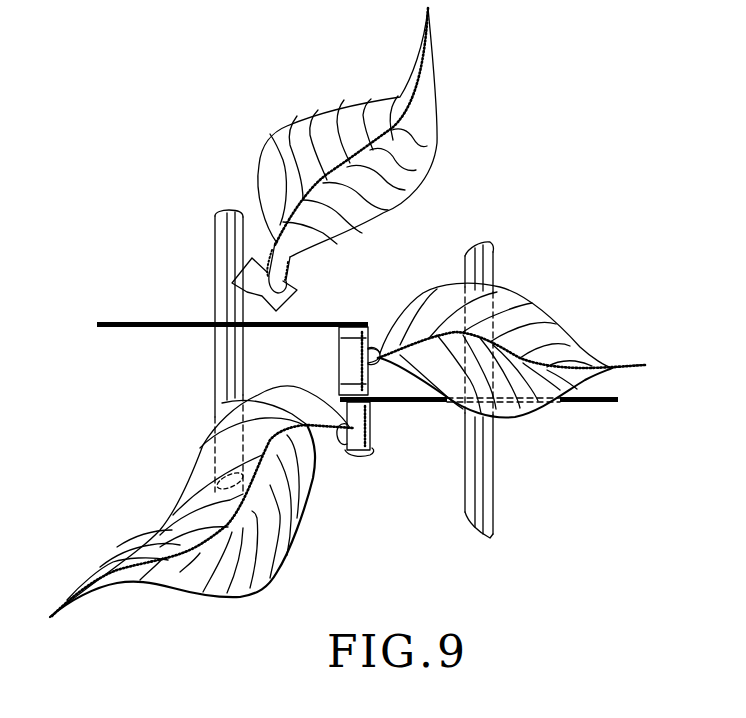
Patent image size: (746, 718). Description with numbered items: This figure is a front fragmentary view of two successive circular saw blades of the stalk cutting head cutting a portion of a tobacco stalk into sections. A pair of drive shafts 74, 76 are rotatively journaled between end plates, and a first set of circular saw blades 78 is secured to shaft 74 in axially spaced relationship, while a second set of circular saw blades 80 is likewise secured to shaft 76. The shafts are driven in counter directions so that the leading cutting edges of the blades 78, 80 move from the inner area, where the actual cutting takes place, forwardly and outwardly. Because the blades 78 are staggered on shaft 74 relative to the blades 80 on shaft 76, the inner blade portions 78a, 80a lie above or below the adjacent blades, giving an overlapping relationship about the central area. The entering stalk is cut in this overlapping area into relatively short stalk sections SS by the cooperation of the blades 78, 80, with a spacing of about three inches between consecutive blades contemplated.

The drive shaft 74 is at (218, 240).
The drive shaft 76 is at (490, 498).
The circular saw blade 78 is at (136, 322).
The inner blade portion 78a is at (370, 326).
The circular saw blade 80 is at (597, 402).
The inner blade portion 80a is at (369, 400).
The stalk section SS is at (300, 288).